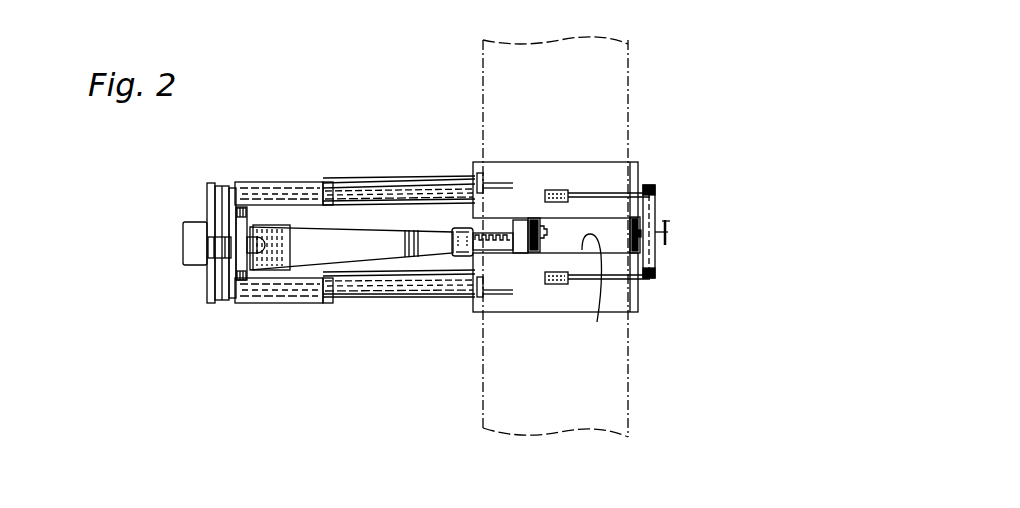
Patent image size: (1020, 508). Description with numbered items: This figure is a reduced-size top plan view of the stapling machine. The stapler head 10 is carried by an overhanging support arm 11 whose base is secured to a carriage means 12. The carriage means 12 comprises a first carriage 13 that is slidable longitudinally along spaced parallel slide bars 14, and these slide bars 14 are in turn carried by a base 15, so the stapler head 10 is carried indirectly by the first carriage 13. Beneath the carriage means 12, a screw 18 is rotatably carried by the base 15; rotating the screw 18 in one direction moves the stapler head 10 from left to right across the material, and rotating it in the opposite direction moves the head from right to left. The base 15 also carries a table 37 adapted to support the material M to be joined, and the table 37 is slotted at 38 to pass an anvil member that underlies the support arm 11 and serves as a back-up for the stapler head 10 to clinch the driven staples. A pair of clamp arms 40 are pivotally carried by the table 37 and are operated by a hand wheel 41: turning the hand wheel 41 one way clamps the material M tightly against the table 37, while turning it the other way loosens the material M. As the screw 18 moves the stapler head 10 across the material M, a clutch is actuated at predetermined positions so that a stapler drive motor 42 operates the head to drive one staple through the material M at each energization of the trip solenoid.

The stapler head 10 is at (456, 260).
The overhanging support arm 11 is at (345, 226).
The carriage means 12 is at (254, 180).
The first carriage 13 is at (274, 303).
The slide bars 14 is at (366, 190).
The base 15 is at (425, 172).
The screw 18 is at (487, 226).
The table 37 is at (529, 158).
The slot 38 is at (597, 322).
The clamp arms 40 is at (592, 192).
The hand wheel 41 is at (668, 232).
The stapler drive motor 42 is at (213, 260).
The material M is at (632, 398).